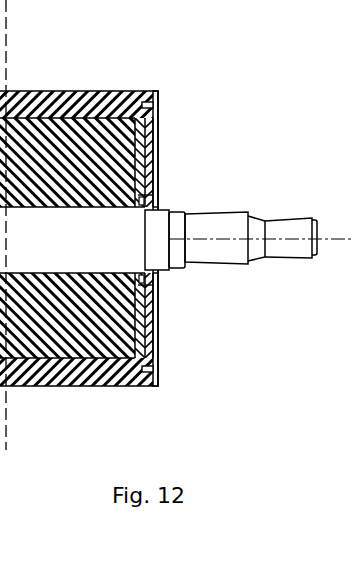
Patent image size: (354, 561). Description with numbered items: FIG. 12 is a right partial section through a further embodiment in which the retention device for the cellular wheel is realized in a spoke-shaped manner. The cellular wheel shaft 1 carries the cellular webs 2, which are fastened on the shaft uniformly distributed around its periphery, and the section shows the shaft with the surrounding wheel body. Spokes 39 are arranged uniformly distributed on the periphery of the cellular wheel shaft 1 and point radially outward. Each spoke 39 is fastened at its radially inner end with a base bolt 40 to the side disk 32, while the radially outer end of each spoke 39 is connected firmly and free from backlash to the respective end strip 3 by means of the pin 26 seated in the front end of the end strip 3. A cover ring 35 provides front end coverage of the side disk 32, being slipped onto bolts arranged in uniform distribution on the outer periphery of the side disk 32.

The cellular wheel shaft 1 is at (213, 221).
The cellular web 2 is at (142, 135).
The end strip 3 is at (66, 100).
The pin 26 is at (157, 368).
The side disk 32 is at (155, 165).
The cover ring 35 is at (159, 101).
The spoke 39 is at (147, 148).
The base bolt 40 is at (155, 283).